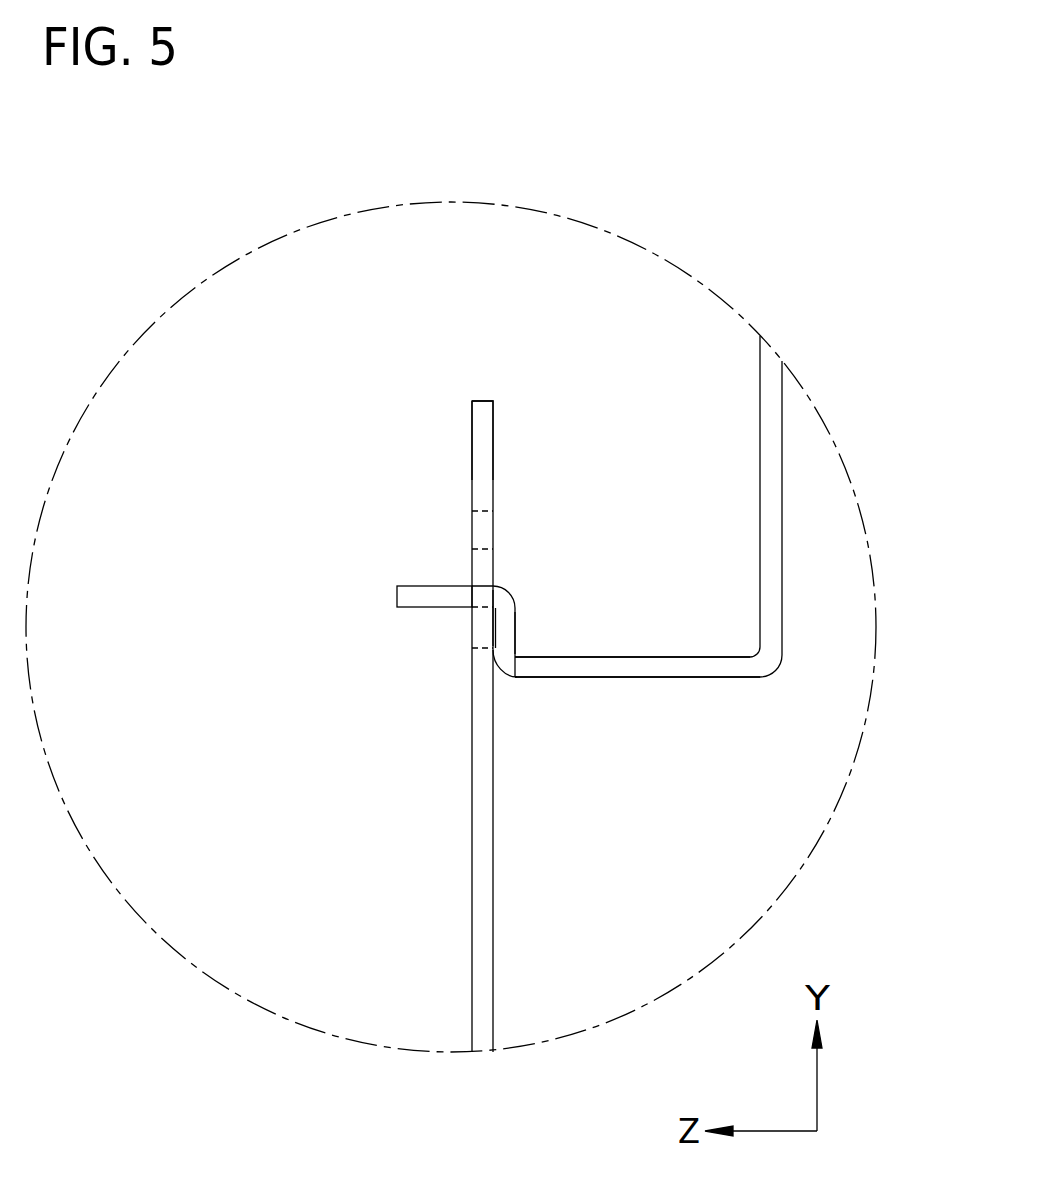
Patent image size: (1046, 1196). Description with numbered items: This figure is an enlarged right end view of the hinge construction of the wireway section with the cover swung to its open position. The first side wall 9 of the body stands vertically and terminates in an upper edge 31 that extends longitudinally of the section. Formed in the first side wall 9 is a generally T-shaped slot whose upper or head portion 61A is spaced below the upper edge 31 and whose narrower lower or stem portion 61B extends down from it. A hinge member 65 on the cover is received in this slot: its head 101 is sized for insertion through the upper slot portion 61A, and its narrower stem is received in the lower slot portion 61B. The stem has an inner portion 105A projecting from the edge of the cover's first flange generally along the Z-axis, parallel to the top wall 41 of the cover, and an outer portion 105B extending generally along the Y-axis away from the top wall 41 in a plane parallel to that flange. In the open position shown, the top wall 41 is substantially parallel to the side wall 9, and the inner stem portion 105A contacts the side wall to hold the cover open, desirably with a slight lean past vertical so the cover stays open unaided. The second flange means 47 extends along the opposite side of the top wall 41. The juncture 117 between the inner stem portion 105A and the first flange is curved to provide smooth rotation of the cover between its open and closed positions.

The first side wall 9 is at (493, 907).
The upper edge 31 is at (478, 400).
The top wall 41 is at (782, 462).
The second flange means 47 is at (628, 678).
The upper portion of slot 61A is at (480, 512).
The lower portion of slot 61B is at (480, 648).
The hinge member 65 is at (372, 592).
The head 101 is at (433, 585).
The inner portion of stem 105A is at (520, 633).
The outer portion of stem 105B is at (491, 606).
The juncture 117 is at (513, 600).